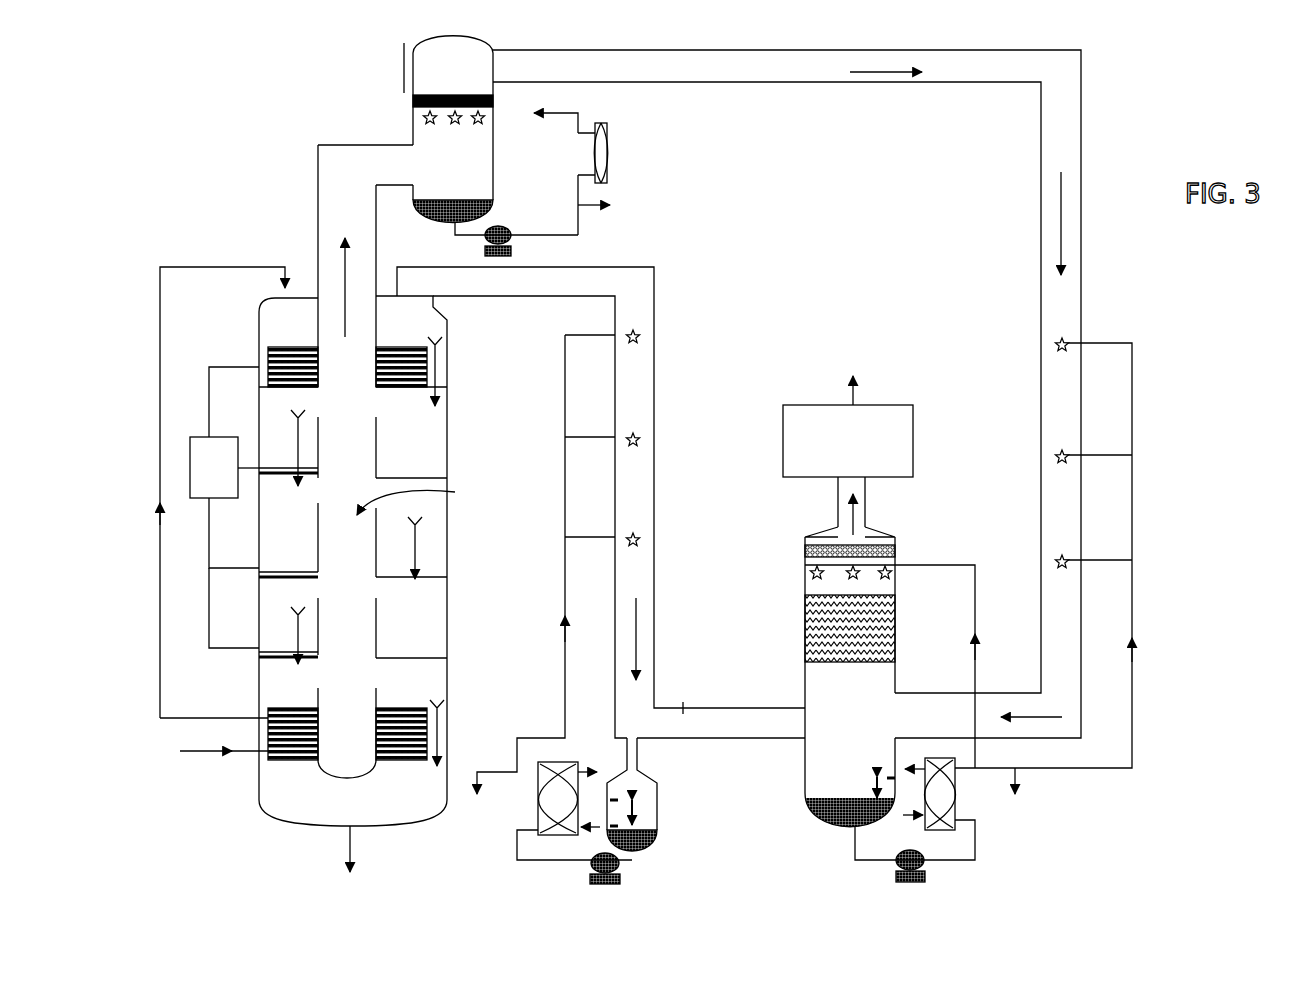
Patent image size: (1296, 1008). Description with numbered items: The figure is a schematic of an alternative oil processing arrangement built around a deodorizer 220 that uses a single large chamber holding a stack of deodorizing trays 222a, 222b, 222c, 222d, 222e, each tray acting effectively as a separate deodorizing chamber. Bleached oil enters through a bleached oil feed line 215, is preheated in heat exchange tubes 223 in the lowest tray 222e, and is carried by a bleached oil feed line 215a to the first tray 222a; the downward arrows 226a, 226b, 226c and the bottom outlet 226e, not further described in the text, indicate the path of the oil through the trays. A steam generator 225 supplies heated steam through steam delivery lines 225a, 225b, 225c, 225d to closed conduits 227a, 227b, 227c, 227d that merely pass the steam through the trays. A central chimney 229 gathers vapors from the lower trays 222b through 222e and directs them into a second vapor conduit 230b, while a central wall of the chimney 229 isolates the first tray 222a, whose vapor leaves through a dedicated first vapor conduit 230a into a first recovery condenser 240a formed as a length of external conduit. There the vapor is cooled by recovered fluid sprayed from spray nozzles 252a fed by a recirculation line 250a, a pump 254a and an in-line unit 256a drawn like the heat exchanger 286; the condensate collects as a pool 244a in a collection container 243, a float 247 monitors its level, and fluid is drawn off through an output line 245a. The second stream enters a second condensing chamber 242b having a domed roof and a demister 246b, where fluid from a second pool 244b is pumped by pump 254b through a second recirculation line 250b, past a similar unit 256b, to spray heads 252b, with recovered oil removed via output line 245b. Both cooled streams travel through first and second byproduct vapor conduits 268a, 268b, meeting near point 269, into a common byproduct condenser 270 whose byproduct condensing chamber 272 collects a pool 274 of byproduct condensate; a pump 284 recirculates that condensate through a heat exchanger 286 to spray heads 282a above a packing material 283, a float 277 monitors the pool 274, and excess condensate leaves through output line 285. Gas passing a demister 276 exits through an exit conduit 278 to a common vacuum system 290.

The bleached oil feed line 215 is at (192, 760).
The bleached oil feed line 215a is at (157, 627).
The deodorizer 220 is at (258, 296).
The first deodorizing tray 222a is at (430, 373).
The second deodorizing tray 222b is at (428, 466).
The third deodorizing tray 222c is at (435, 565).
The fourth deodorizing tray 222d is at (440, 640).
The fifth deodorizing tray 222e is at (445, 747).
The heat exchange tubes 223 is at (290, 760).
The steam generator 225 is at (214, 467).
The steam delivery line 225a is at (228, 372).
The steam delivery line 225b is at (245, 475).
The steam delivery line 225c is at (228, 587).
The steam delivery line 225d is at (305, 622).
The spray nozzle 226a is at (440, 398).
The spray nozzle 226b is at (302, 442).
The spray nozzle 226c is at (420, 538).
The column bottom outlet 226e is at (348, 855).
The closed conduit 227a is at (268, 346).
The closed conduit 227b is at (312, 476).
The closed conduit 227c is at (314, 578).
The closed conduit 227d is at (312, 659).
The central chimney 229 is at (428, 500).
The first vapor conduit 230a is at (548, 296).
The second vapor conduit 230b is at (318, 190).
The first recovery condenser 240a is at (652, 396).
The second condensing chamber 242b is at (413, 118).
The collection container 243 is at (688, 770).
The first pool 244a is at (657, 838).
The second pool 244b is at (462, 210).
The recovered oil output line 245a is at (460, 844).
The recovered oil output line 245b is at (600, 208).
The demister 246b is at (488, 38).
The float 247 is at (638, 818).
The recovered oil recirculation line 250a is at (565, 466).
The second recirculation line 250b is at (578, 113).
The spray nozzles 252a is at (640, 334).
The spray heads 252b is at (462, 122).
The pump 254a is at (608, 885).
The pump 254b is at (512, 240).
The heat exchanger 256a is at (556, 833).
The heat exchanger 256b is at (607, 155).
The first byproduct vapor conduit 268a is at (748, 740).
The second byproduct vapor conduit 268b is at (1075, 128).
The junction 269 is at (722, 738).
The byproduct condenser 270 is at (797, 543).
The byproduct condensing chamber 272 is at (805, 596).
The pool of byproduct condensate 274 is at (838, 830).
The demister 276 is at (880, 545).
The float 277 is at (873, 785).
The exit conduit 278 is at (866, 512).
The spray heads 282a is at (865, 576).
The packing material 283 is at (893, 636).
The pump 284 is at (925, 868).
The output line 285 is at (1020, 778).
The heat exchanger 286 is at (950, 804).
The vacuum system 290 is at (897, 446).